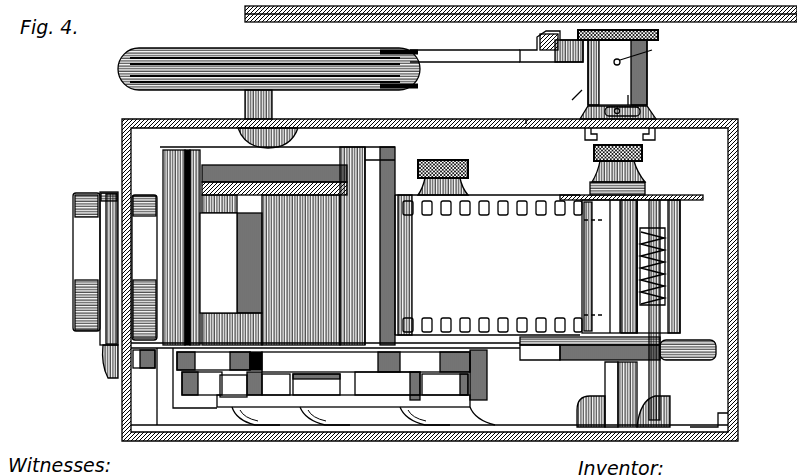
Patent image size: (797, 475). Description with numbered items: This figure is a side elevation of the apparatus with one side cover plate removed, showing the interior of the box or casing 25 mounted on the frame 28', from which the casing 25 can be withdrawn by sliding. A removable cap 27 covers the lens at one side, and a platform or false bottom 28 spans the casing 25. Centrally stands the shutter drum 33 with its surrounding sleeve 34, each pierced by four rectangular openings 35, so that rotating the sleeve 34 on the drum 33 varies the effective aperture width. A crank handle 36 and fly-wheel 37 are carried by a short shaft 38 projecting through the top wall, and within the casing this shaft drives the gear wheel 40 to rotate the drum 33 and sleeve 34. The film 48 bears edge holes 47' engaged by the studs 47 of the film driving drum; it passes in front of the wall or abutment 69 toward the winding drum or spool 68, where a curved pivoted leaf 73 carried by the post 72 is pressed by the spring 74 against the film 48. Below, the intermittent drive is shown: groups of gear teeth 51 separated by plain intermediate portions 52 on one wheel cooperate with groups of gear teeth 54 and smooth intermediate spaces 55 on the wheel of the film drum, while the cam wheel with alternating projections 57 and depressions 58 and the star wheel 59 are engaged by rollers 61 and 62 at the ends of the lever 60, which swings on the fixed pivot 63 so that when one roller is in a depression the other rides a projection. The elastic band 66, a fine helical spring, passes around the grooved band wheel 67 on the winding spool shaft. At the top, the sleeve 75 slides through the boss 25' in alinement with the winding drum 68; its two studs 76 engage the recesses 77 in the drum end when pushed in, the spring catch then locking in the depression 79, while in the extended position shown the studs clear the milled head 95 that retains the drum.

The casing 25 is at (430, 268).
The boss 25' is at (554, 107).
The removable cap 27 is at (80, 253).
The platform or false bottom 28 is at (116, 361).
The frame 28' is at (652, 394).
The drum 33 is at (250, 243).
The sleeve 34 is at (283, 246).
The openings 35 is at (218, 263).
The crank handle 36 is at (551, 61).
The fly-wheel 37 is at (420, 72).
The short shaft 38 is at (292, 100).
The gear wheel 40 is at (268, 182).
The studs 47 is at (490, 265).
The holes 47' is at (477, 176).
The film 48 is at (487, 265).
The gear teeth 51 is at (226, 360).
The intermediate portions 52 is at (366, 363).
The gear teeth 54 is at (481, 400).
The intermediate spaces 55 is at (387, 383).
The projections 57 is at (214, 385).
The depressions 58 is at (276, 385).
The cam or star wheel 59 is at (412, 397).
The lever 60 is at (365, 402).
The roller 61 is at (445, 385).
The roller 62 is at (241, 384).
The fixed pivot 63 is at (316, 386).
The elastic band 66 is at (676, 340).
The grooved band wheel 67 is at (588, 361).
The winding drum or spool 68 is at (670, 197).
The wall or abutment 69 is at (398, 192).
The post 72 is at (660, 385).
The curved pivoted leaf 73 is at (609, 266).
The spring 74 is at (662, 246).
The sleeve 75 is at (650, 70).
The studs 76 is at (588, 139).
The recesses 77 is at (621, 100).
The depression 79 is at (654, 50).
The milled head 95 is at (642, 162).